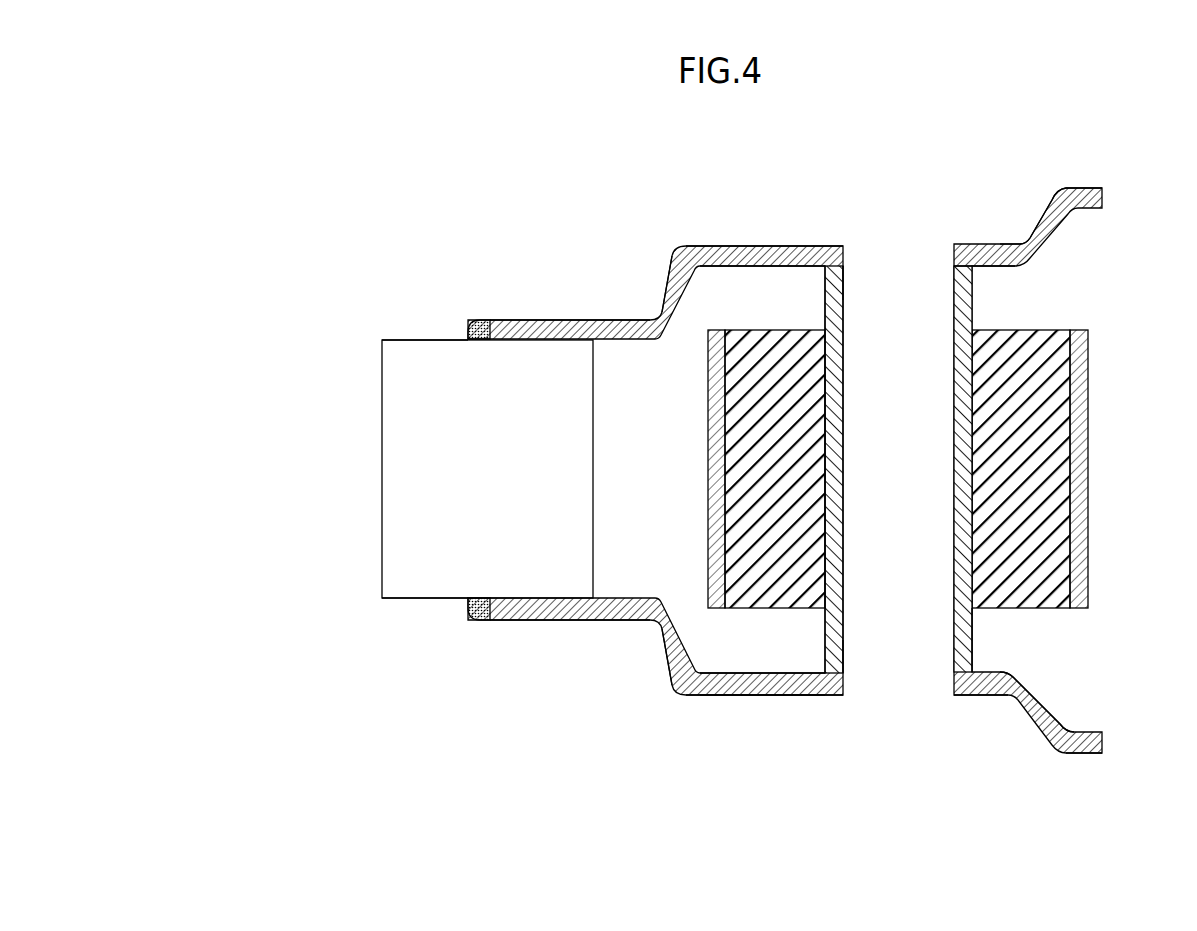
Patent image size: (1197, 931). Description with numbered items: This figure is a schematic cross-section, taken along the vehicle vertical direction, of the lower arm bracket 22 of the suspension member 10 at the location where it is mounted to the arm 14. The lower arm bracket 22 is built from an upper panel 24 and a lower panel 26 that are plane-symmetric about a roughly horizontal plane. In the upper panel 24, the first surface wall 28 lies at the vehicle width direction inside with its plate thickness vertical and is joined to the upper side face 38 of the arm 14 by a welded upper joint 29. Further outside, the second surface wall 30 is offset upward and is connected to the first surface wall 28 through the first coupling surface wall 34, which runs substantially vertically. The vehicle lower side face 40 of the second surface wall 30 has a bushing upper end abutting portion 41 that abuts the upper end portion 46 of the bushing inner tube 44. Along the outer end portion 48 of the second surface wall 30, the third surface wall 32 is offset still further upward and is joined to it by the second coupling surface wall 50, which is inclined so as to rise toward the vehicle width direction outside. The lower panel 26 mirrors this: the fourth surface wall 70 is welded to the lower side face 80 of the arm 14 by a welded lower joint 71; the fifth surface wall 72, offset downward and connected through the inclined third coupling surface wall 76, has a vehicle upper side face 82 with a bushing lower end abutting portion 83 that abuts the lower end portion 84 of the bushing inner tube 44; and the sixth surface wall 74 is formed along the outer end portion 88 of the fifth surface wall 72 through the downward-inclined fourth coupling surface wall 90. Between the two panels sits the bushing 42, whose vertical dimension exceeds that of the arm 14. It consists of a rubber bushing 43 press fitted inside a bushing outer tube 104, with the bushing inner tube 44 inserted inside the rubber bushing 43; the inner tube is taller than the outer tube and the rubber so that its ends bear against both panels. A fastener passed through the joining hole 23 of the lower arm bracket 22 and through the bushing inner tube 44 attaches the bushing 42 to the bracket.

The suspension member 10 is at (400, 445).
The arm 14 is at (372, 361).
The lower arm bracket 22 is at (1079, 168).
The joining hole 23 is at (843, 257).
The upper panel 24 is at (701, 474).
The lower panel 26 is at (775, 699).
The first surface wall 28 is at (562, 330).
The welded upper joint 29 is at (482, 322).
The second surface wall 30 is at (754, 246).
The third surface wall 32 is at (1085, 192).
The first coupling surface wall 34 is at (667, 296).
The upper side face 38 is at (421, 339).
The vehicle lower side face 40 is at (763, 268).
The bushing upper end abutting portion 41 is at (953, 271).
The bushing 42 is at (1061, 461).
The rubber bushing 43 is at (735, 415).
The bushing inner tube 44 is at (968, 313).
The upper end portion 46 is at (972, 271).
The end portion 48 is at (1010, 245).
The second coupling surface wall 50 is at (1033, 216).
The fourth surface wall 70 is at (556, 620).
The welded lower joint 71 is at (478, 612).
The fifth surface wall 72 is at (733, 691).
The sixth surface wall 74 is at (1085, 755).
The third coupling surface wall 76 is at (669, 657).
The lower side face 80 is at (410, 600).
The vehicle upper side face 82 is at (750, 673).
The bushing lower end abutting portion 83 is at (960, 673).
The lower end portion 84 is at (968, 662).
The end portion 88 is at (998, 697).
The fourth coupling surface wall 90 is at (1035, 723).
The bushing outer tube 104 is at (1093, 466).